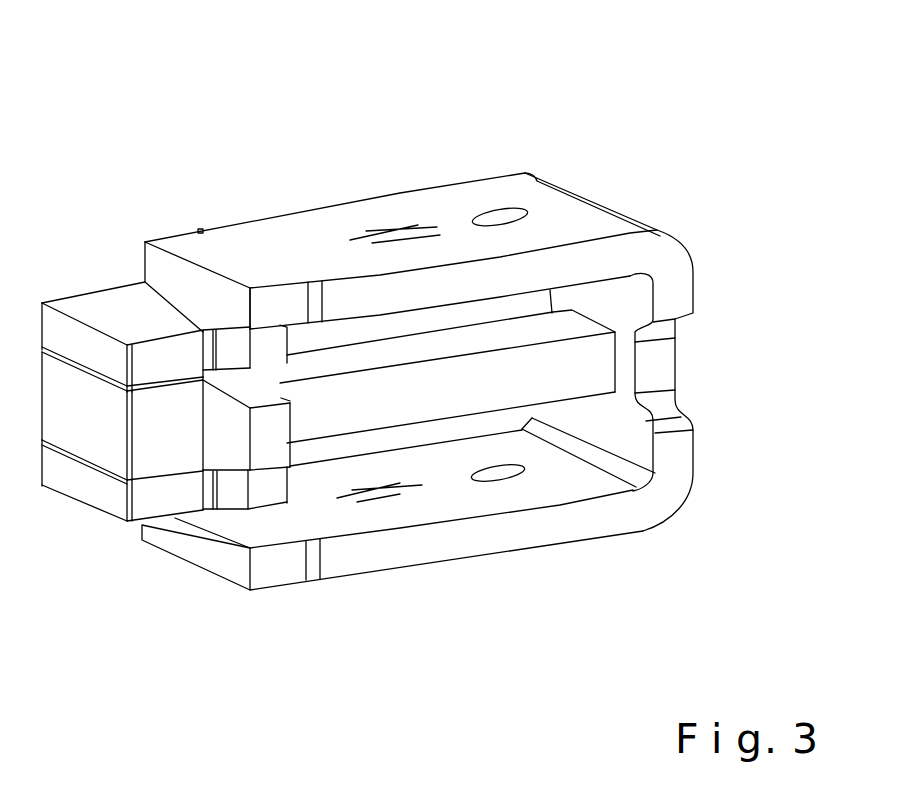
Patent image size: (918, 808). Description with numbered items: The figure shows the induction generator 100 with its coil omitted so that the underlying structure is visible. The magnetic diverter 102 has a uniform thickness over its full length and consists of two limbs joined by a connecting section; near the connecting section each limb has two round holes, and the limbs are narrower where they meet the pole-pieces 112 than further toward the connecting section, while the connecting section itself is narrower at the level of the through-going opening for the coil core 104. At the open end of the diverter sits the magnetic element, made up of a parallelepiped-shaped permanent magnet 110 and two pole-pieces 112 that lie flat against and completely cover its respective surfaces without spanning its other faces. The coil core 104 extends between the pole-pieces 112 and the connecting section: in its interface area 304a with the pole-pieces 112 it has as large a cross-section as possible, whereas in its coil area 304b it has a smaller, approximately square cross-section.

The induction generator 100 is at (391, 165).
The magnetic diverter 102 is at (300, 247).
The coil core 104 is at (425, 432).
The permanent magnet 110 is at (85, 417).
The pole-pieces 112 is at (132, 313).
The interface area 304a is at (233, 433).
The coil area 304b is at (553, 367).